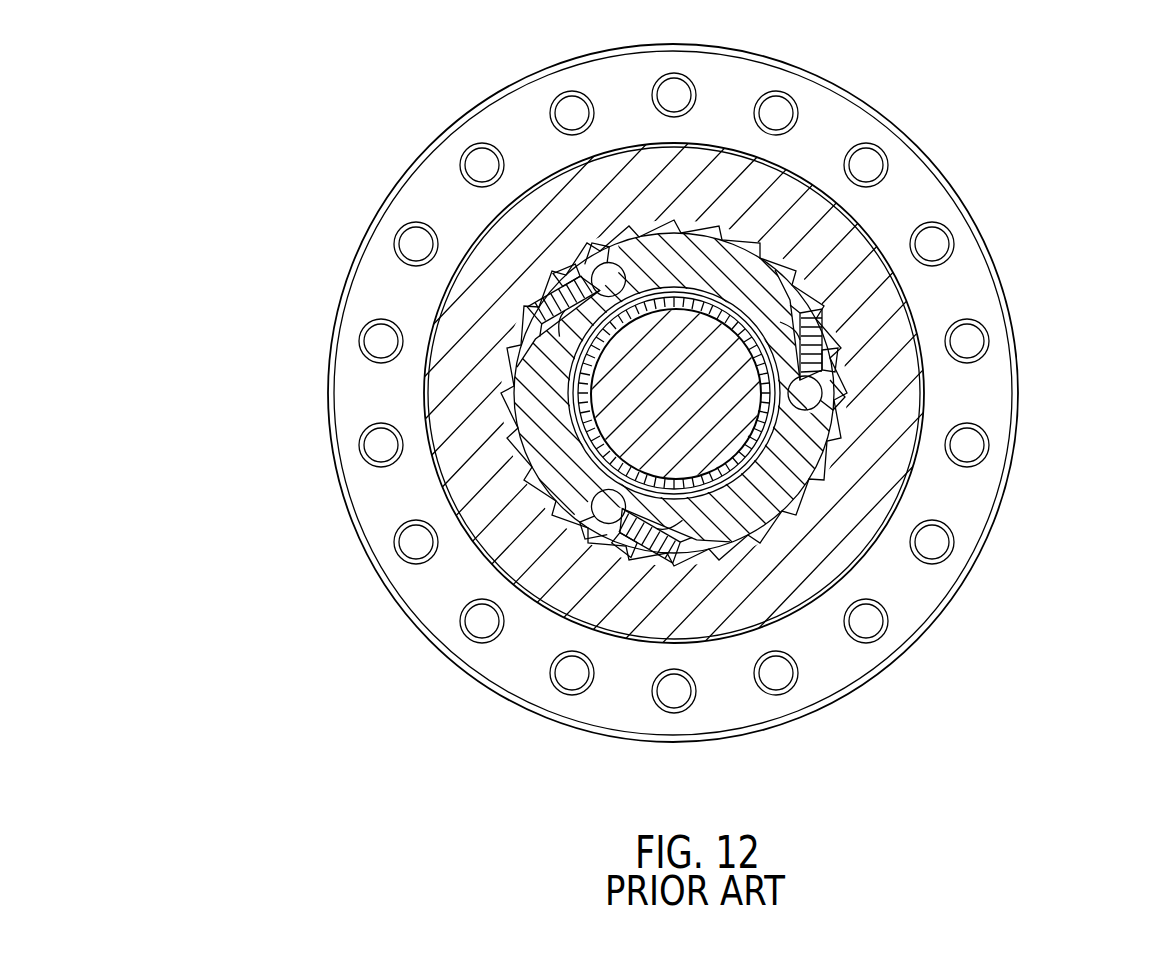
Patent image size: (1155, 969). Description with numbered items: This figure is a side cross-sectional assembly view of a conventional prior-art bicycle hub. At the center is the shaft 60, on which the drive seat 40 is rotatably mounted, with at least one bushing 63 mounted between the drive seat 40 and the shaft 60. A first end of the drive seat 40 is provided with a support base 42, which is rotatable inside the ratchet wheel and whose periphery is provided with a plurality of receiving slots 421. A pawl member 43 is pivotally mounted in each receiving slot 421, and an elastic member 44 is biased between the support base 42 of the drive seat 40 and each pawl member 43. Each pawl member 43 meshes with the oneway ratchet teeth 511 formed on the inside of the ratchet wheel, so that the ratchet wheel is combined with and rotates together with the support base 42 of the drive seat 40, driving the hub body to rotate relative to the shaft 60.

The drive seat 40 is at (823, 130).
The support base 42 is at (758, 497).
The receiving slots 421 is at (780, 502).
The pawl members 43 is at (823, 353).
The elastic members 44 is at (807, 273).
The oneway ratchet teeth 511 is at (818, 472).
The shaft 60 is at (617, 445).
The bushing 63 is at (555, 406).